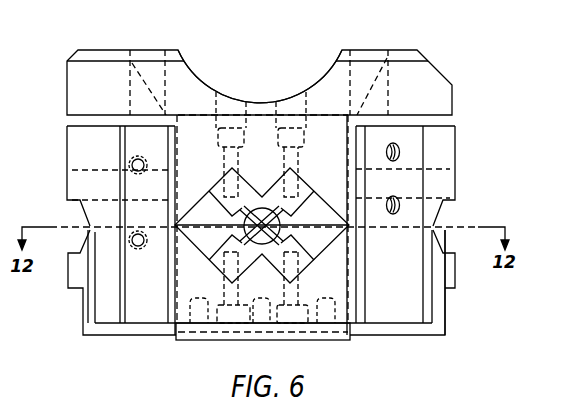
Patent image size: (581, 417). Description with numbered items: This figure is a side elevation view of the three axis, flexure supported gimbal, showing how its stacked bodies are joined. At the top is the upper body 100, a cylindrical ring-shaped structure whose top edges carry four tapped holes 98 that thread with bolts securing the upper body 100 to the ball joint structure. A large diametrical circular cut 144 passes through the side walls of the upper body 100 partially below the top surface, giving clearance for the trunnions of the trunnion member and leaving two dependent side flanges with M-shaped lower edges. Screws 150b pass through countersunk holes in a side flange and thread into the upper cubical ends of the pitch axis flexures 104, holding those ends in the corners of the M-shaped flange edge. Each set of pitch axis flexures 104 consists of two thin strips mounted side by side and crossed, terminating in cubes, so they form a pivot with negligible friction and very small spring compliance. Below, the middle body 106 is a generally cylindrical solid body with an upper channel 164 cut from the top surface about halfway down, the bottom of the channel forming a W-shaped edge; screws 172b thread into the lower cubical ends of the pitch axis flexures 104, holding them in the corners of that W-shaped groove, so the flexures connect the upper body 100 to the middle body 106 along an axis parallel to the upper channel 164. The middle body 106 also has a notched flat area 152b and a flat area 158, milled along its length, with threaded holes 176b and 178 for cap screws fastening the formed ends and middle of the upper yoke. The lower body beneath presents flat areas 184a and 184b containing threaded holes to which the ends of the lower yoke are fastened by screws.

The tapped holes 98 is at (133, 62).
The upper body 100 is at (453, 92).
The pitch axis flexures 104 is at (302, 207).
The middle body 106 is at (455, 136).
The circular cut 144 is at (198, 72).
The screws 150b is at (283, 128).
The notched flat area 152b is at (142, 317).
The flat area 158 is at (410, 317).
The upper channel 164 is at (175, 182).
The screws 172b is at (286, 292).
The threaded holes 176b is at (132, 234).
The threaded holes 178 is at (399, 200).
The flat area 184a is at (445, 312).
The flat area 184b is at (83, 318).